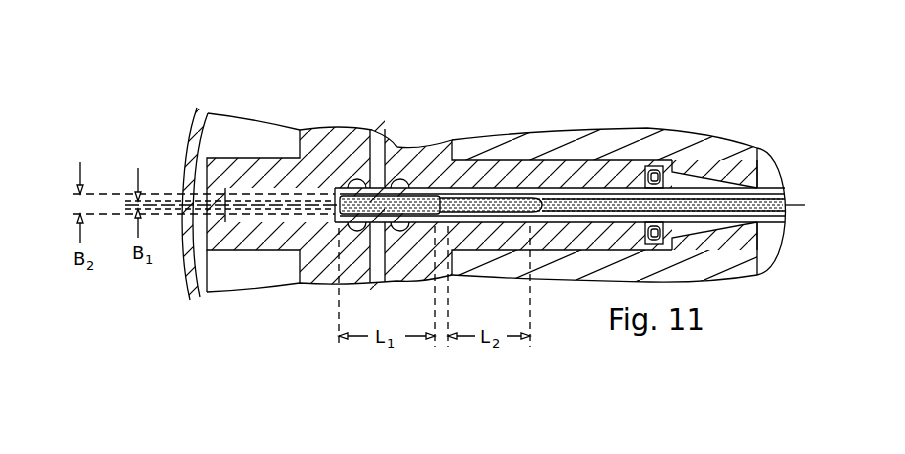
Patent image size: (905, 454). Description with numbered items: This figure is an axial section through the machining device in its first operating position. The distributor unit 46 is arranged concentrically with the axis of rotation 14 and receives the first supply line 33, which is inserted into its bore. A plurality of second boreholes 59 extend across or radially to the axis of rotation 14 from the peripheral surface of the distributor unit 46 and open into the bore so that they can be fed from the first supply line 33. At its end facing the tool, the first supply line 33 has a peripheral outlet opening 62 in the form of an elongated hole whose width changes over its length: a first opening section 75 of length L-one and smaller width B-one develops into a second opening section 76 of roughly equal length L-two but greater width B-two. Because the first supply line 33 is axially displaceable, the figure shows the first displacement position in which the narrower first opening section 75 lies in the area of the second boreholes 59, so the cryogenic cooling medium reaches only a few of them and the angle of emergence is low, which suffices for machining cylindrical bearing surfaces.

The axis of rotation 14 is at (177, 205).
The distributor unit 46 is at (297, 292).
The second boreholes 59 is at (376, 196).
The first opening section 75 is at (375, 305).
The second opening section 76 is at (457, 197).
The outlet opening 62 is at (468, 182).
The first supply line 33 is at (767, 185).